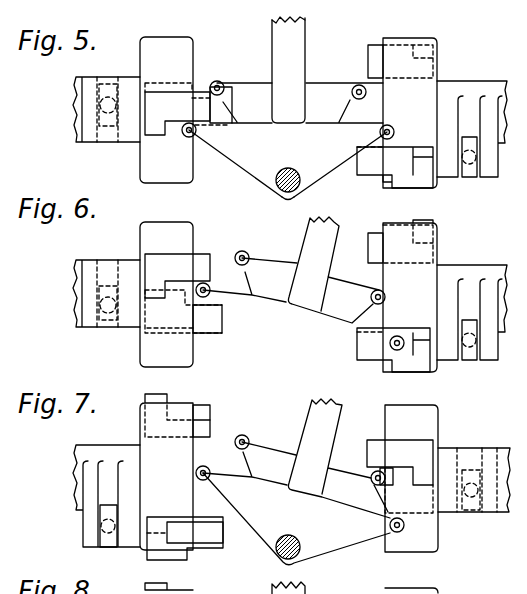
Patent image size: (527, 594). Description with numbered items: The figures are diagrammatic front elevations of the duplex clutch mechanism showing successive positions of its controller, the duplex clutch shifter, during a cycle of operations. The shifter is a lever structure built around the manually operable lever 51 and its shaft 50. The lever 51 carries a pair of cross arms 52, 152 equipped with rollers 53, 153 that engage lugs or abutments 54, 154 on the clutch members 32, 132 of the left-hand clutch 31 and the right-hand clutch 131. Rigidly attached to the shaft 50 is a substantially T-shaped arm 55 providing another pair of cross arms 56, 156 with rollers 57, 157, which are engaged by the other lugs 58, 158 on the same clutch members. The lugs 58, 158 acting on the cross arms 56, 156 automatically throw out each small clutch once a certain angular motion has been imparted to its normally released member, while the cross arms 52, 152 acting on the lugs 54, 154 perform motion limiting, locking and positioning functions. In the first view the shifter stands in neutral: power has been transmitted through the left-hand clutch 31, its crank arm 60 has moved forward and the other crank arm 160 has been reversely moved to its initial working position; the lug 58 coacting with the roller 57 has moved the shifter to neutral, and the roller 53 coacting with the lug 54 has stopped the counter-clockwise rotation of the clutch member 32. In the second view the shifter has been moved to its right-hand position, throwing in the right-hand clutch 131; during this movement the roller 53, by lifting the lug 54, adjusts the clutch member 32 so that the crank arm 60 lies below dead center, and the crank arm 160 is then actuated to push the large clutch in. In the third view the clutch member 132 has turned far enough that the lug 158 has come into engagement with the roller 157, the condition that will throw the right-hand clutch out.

In FIG. 6, the left-hand clutch 31 is at (134, 240).
In FIG. 5, the clutch member 32 is at (153, 42).
In FIG. 6, the clutch member 32 is at (155, 226).
In FIG. 5, the shaft 50 is at (280, 186).
In FIG. 5, the lever 51 is at (296, 31).
In FIG. 5, the cross arm 52 is at (229, 164).
In FIG. 5, the roller 53 is at (183, 137).
In FIG. 6, the roller 53 is at (212, 294).
In FIG. 7, the roller 53 is at (212, 478).
In FIG. 5, the lug 54 is at (180, 100).
In FIG. 6, the lug 54 is at (192, 262).
In FIG. 7, the lug 54 is at (205, 412).
In FIG. 5, the T-shaped arm 55 is at (323, 114).
In FIG. 5, the cross arm 56 is at (248, 84).
In FIG. 5, the roller 57 is at (221, 83).
In FIG. 6, the roller 57 is at (250, 257).
In FIG. 7, the roller 57 is at (249, 440).
In FIG. 5, the lug 58 is at (226, 106).
In FIG. 6, the lug 58 is at (208, 322).
In FIG. 7, the lug 58 is at (210, 540).
In FIG. 7, the crank arm 60 is at (128, 550).
In FIG. 6, the right-hand clutch 131 is at (445, 307).
In FIG. 6, the clutch member 132 is at (440, 227).
In FIG. 5, the cross arm 152 is at (336, 172).
In FIG. 5, the roller 153 is at (392, 127).
In FIG. 6, the roller 153 is at (389, 343).
In FIG. 7, the roller 153 is at (402, 534).
In FIG. 5, the lug 154 is at (372, 52).
In FIG. 6, the lug 154 is at (375, 237).
In FIG. 7, the lug 154 is at (374, 442).
In FIG. 5, the cross arm 156 is at (324, 88).
In FIG. 5, the roller 157 is at (357, 84).
In FIG. 6, the roller 157 is at (370, 298).
In FIG. 7, the roller 157 is at (370, 478).
In FIG. 5, the lug 158 is at (380, 165).
In FIG. 6, the lug 158 is at (375, 363).
In FIG. 7, the lug 158 is at (362, 497).
In FIG. 5, the crank arm 160 is at (482, 175).
In FIG. 6, the crank arm 160 is at (482, 362).